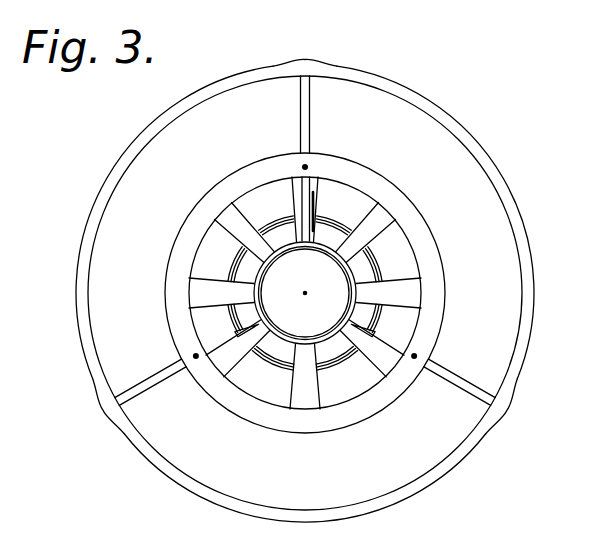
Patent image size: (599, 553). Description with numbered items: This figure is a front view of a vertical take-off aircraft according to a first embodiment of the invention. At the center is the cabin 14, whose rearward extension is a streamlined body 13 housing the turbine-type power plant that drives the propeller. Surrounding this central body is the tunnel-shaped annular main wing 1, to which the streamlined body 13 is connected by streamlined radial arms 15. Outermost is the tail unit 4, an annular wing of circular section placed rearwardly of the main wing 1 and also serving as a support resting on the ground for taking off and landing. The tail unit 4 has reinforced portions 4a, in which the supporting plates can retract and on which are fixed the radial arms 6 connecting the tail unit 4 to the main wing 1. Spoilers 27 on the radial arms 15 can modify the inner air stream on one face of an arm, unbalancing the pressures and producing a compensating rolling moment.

The main wing 1 is at (273, 168).
The tail unit 4 is at (83, 248).
The reinforced portions 4a is at (314, 62).
The radial arms 6 is at (309, 122).
The streamlined body 13 is at (255, 268).
The cabin 14 is at (337, 282).
The streamlined radial arms 15 is at (307, 210).
The spoilers 27 is at (313, 197).